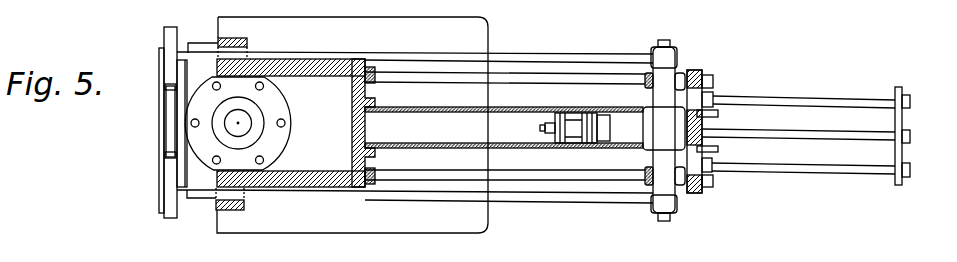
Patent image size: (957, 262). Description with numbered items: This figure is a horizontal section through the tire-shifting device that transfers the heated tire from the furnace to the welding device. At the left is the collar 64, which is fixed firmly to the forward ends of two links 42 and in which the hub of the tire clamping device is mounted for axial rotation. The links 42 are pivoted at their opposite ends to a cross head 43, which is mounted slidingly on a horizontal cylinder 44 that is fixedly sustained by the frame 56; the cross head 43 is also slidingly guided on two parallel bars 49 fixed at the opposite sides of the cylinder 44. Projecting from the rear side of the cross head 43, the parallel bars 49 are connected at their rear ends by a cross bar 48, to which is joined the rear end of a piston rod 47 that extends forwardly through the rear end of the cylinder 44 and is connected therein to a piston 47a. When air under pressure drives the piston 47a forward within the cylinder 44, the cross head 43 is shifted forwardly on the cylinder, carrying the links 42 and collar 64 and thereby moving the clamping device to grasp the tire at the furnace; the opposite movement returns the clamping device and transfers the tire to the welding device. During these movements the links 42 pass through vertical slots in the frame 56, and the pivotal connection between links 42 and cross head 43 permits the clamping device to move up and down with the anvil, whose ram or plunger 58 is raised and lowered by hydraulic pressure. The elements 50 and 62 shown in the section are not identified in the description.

The links 42 is at (520, 57).
The cross head 43 is at (648, 113).
The horizontal cylinder 44 is at (504, 148).
The piston rod 47 is at (791, 136).
The piston 47a is at (556, 112).
The cross bar 48 is at (900, 152).
The parallel bars 49 is at (799, 100).
The flange plate 50 is at (696, 192).
The frame 56 is at (365, 153).
The ram or plunger 58 is at (275, 123).
The bolts 62 is at (236, 39).
The collar 64 is at (170, 175).